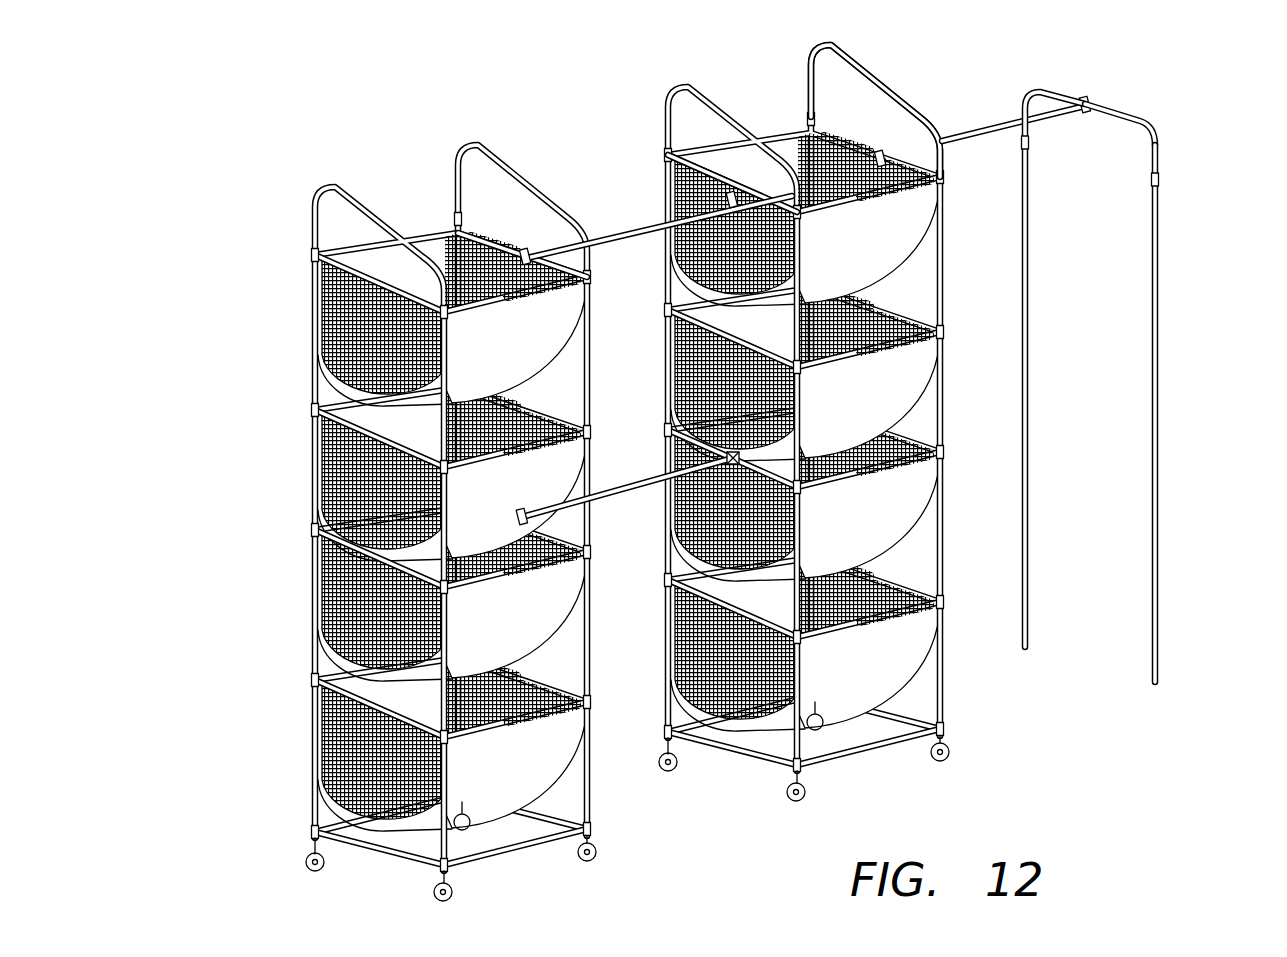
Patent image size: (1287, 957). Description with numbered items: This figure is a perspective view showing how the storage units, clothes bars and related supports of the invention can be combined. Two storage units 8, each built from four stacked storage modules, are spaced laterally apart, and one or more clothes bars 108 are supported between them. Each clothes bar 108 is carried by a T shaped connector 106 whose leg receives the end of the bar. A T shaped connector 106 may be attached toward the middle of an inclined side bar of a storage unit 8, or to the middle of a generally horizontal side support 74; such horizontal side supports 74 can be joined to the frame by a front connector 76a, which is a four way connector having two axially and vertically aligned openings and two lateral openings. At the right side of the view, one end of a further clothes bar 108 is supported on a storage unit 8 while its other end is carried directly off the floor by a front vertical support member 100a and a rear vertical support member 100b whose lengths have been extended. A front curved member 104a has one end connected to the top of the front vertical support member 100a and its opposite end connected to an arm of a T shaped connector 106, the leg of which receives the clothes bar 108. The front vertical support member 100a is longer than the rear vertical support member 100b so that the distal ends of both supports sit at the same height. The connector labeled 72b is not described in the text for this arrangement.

The storage unit 8 is at (282, 546).
The horizontal side support 74 is at (578, 257).
The front connector 76a is at (947, 186).
The clothes bar 108 is at (632, 232).
The coupling joint 72b is at (730, 456).
The T shaped connector 106 is at (525, 250).
The front vertical support member 100a is at (1158, 356).
The rear vertical support member 100b is at (1028, 295).
The front curved member 104a is at (1140, 118).